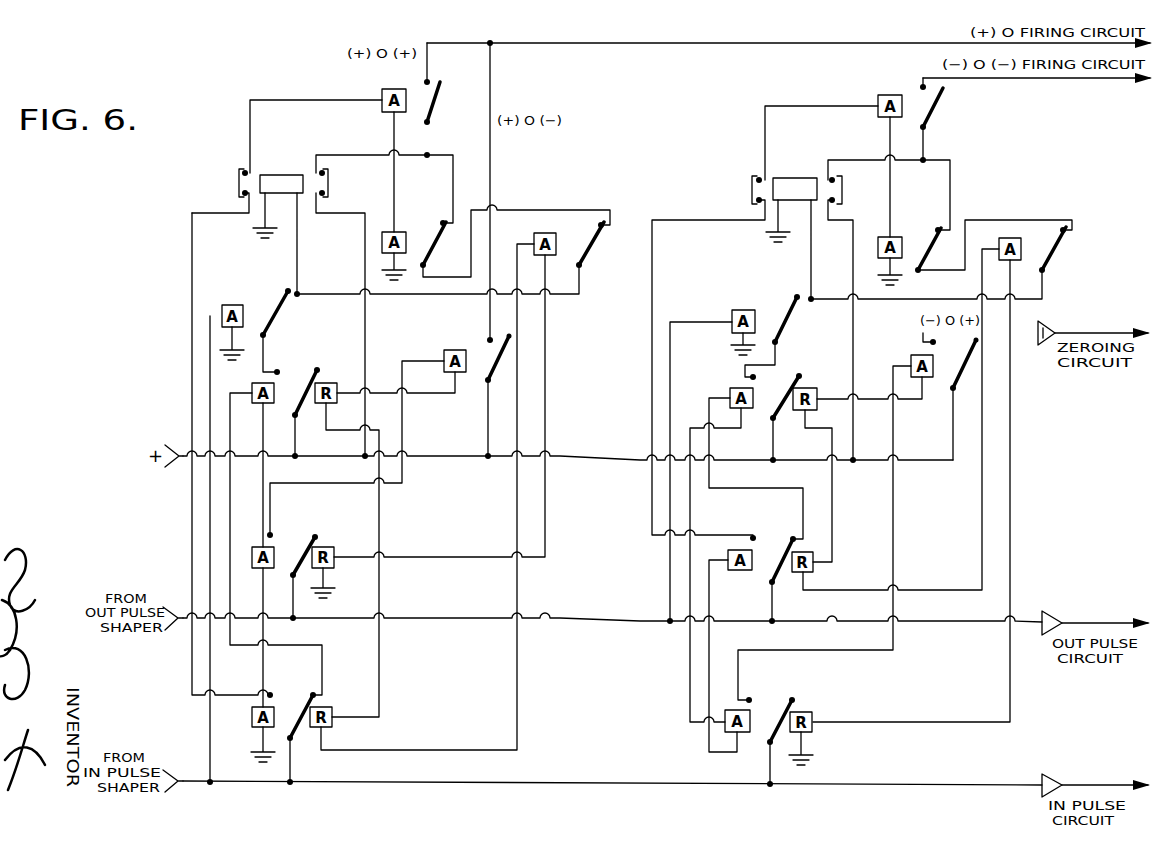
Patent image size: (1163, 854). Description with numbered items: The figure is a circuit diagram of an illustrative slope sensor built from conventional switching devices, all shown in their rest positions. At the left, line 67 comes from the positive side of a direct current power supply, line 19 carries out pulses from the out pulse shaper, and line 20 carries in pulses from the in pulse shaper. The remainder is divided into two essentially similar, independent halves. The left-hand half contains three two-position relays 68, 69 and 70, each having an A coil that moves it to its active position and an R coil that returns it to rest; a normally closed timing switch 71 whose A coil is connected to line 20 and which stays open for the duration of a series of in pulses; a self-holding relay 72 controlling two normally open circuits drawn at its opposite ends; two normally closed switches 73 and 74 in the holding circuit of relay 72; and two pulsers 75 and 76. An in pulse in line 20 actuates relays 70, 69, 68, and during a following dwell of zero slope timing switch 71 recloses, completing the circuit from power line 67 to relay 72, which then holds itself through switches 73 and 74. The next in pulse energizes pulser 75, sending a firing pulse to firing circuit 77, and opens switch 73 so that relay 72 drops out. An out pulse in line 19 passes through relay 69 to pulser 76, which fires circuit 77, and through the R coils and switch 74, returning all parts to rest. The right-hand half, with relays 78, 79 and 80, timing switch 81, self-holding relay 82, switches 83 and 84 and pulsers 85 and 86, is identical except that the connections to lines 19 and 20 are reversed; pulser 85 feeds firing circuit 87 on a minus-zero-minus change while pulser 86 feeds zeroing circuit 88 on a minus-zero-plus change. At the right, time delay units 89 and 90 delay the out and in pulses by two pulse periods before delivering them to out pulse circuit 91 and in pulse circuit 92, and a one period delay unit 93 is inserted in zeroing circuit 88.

The line from out pulse shaper 19 is at (180, 625).
The line from in pulse shaper 20 is at (180, 786).
The power line 67 is at (183, 458).
The two-position relay 68 is at (289, 694).
The two-position relay 69 is at (293, 537).
The two-position relay 70 is at (294, 376).
The timing switch 71 is at (256, 308).
The self-holding relay 72 is at (272, 175).
The normally closed switch 73 is at (416, 233).
The normally closed switch 74 is at (573, 239).
The pulser 75 is at (431, 87).
The pulser 76 is at (482, 348).
The firing circuit 77 is at (592, 44).
The two-position relay 78 is at (771, 538).
The two-position relay 79 is at (766, 702).
The two-position relay 80 is at (778, 382).
The timing switch 81 is at (771, 307).
The self-holding relay 82 is at (797, 176).
The normally closed switch 83 is at (911, 237).
The normally closed switch 84 is at (1034, 246).
The pulser 85 is at (942, 85).
The pulser 86 is at (922, 350).
The firing circuit 87 is at (1045, 80).
The zeroing circuit 88 is at (1100, 333).
The time delay unit 89 is at (1047, 630).
The time delay unit 90 is at (1043, 777).
The out pulse circuit 91 is at (1109, 623).
The in pulse circuit 92 is at (1097, 786).
The one period delay unit 93 is at (1040, 345).